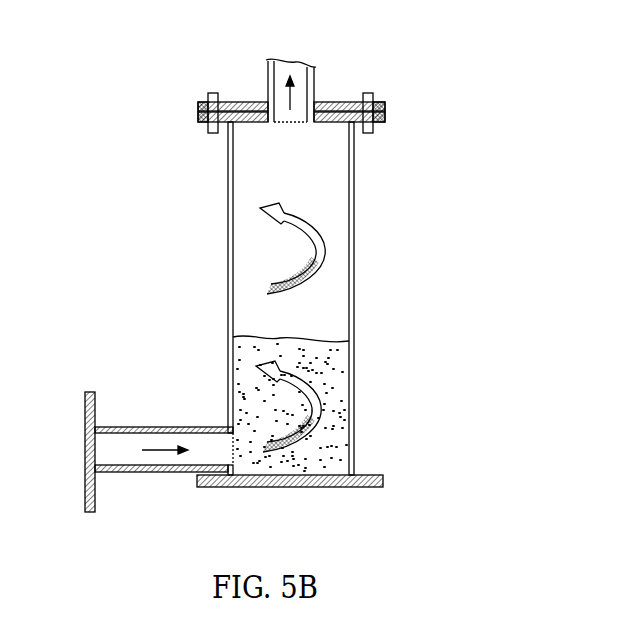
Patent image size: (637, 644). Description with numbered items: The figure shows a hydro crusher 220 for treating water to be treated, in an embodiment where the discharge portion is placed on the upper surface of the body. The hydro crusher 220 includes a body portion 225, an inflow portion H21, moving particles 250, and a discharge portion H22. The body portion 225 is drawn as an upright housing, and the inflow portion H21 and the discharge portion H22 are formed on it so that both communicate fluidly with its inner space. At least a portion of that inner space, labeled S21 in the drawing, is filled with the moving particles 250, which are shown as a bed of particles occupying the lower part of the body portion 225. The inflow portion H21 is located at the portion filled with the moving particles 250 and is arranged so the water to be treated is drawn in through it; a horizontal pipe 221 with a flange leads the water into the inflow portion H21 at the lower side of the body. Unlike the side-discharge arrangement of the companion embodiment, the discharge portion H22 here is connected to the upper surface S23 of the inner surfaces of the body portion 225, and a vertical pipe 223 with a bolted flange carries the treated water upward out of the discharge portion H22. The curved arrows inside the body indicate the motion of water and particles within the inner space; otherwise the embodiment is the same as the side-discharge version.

The hydro crusher 220 is at (251, 266).
The inlet pipe 221 is at (145, 427).
The outlet pipe 223 is at (268, 71).
The body portion 225 is at (357, 260).
The moving particles 250 is at (355, 415).
The upper separation space S21 is at (323, 198).
The upper surface S23 is at (253, 124).
The inflow portion H21 is at (230, 447).
The discharge portion H22 is at (296, 125).